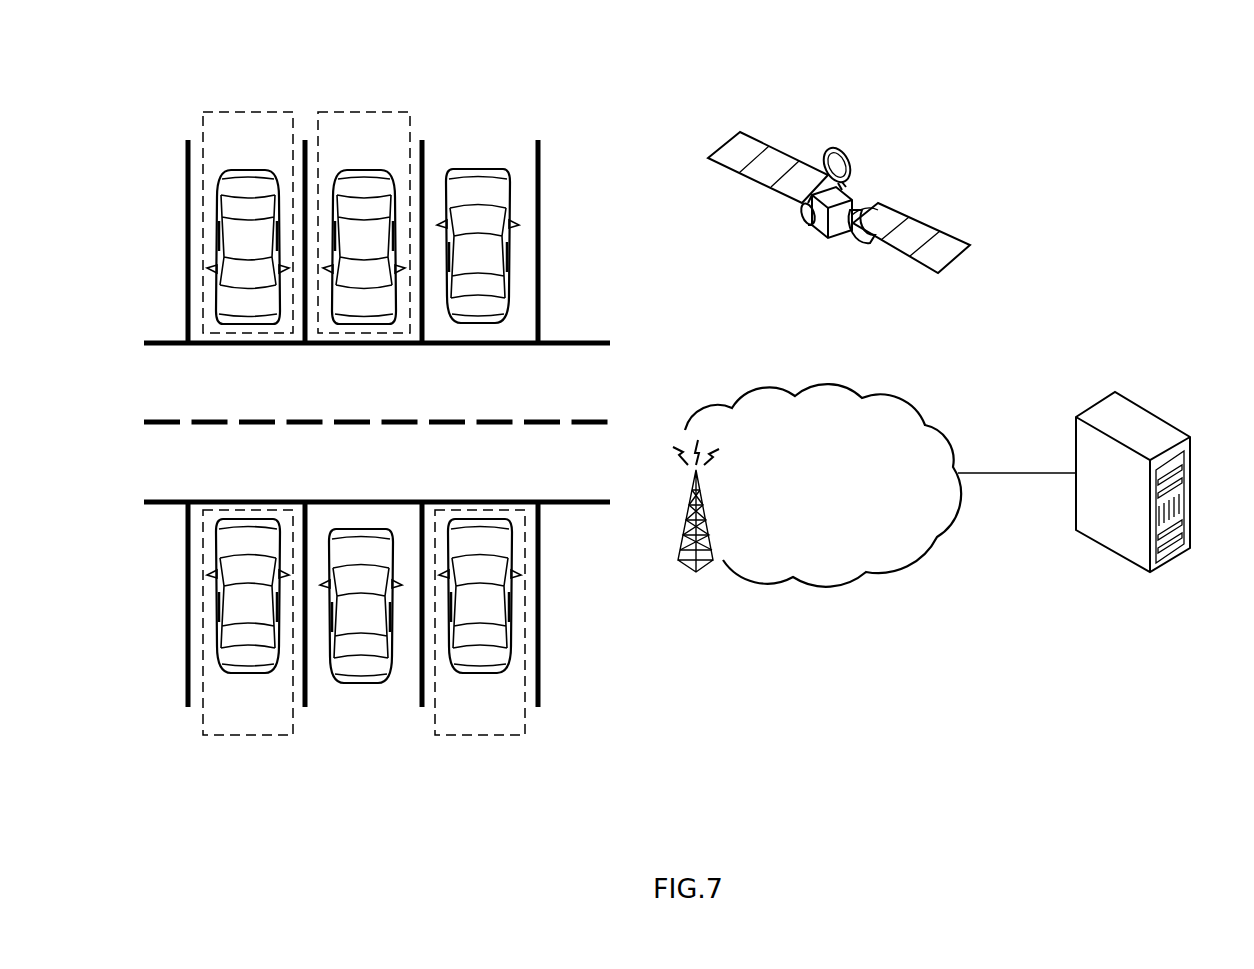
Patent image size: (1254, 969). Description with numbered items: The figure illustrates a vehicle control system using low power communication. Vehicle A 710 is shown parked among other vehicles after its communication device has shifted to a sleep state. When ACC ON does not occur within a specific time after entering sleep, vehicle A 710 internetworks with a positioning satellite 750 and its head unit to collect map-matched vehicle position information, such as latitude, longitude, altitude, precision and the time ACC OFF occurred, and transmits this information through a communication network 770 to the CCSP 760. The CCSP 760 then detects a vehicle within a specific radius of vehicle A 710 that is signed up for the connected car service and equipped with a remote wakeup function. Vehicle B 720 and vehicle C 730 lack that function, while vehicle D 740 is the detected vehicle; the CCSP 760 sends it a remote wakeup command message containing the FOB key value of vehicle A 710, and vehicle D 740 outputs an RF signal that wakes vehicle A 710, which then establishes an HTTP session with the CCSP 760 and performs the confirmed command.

The vehicle A 710 is at (247, 735).
The vehicle B 720 is at (478, 735).
The vehicle C 730 is at (247, 112).
The vehicle D 740 is at (364, 112).
The positioning satellite 750 is at (740, 132).
The CCSP 760 is at (1115, 392).
The communication network 770 is at (760, 392).